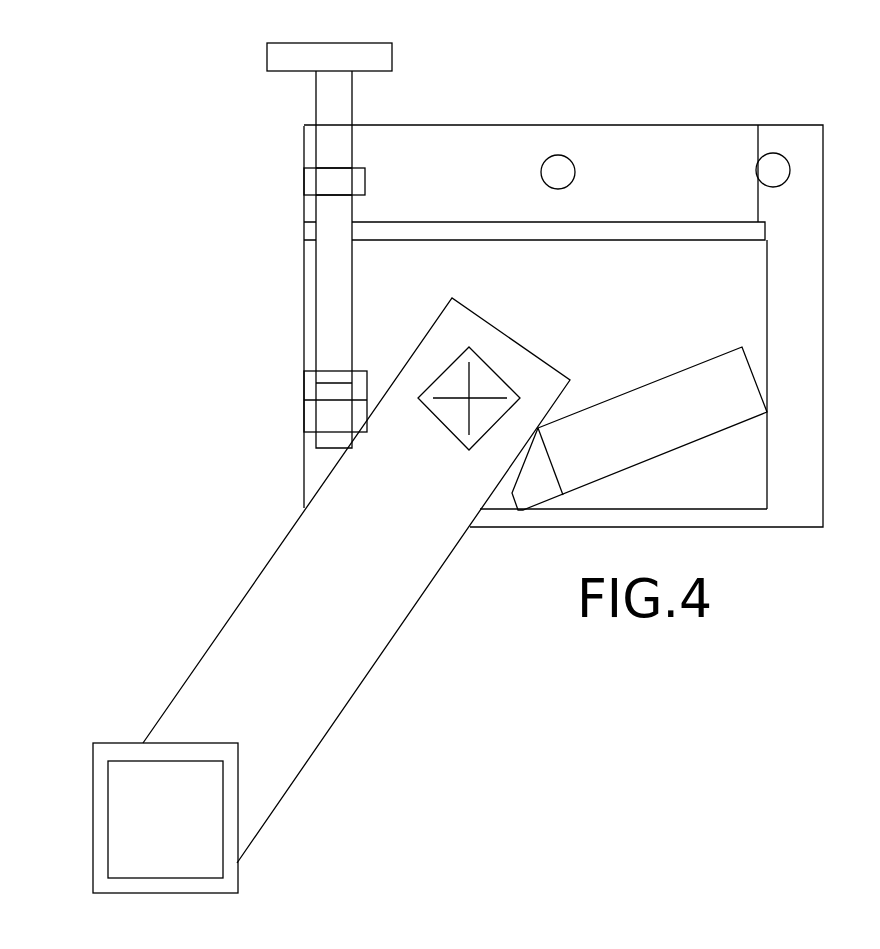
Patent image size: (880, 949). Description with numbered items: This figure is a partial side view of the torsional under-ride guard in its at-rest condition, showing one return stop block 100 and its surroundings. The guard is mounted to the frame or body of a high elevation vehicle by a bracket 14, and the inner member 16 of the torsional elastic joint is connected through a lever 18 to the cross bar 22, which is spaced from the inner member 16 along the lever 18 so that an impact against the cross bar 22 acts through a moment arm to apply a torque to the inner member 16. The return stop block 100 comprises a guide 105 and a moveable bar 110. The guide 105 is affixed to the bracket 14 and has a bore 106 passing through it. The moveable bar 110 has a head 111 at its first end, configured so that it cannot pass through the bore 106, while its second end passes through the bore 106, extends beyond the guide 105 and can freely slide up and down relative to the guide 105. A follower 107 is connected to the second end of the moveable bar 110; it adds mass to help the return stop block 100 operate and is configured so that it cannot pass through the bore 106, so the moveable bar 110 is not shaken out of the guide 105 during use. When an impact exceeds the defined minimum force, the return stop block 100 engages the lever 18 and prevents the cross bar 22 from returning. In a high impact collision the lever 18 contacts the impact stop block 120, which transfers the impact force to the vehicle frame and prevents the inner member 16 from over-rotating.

The return stop block 100 is at (85, 27).
The bracket 14 is at (678, 158).
The inner member 16 is at (478, 385).
The lever 18 is at (370, 605).
The cross bar 22 is at (187, 817).
The guide 105 is at (365, 177).
The bore 106 is at (327, 182).
The follower 107 is at (337, 412).
The moveable bar 110 is at (318, 100).
The head 111 is at (385, 47).
The impact stop block 120 is at (688, 408).